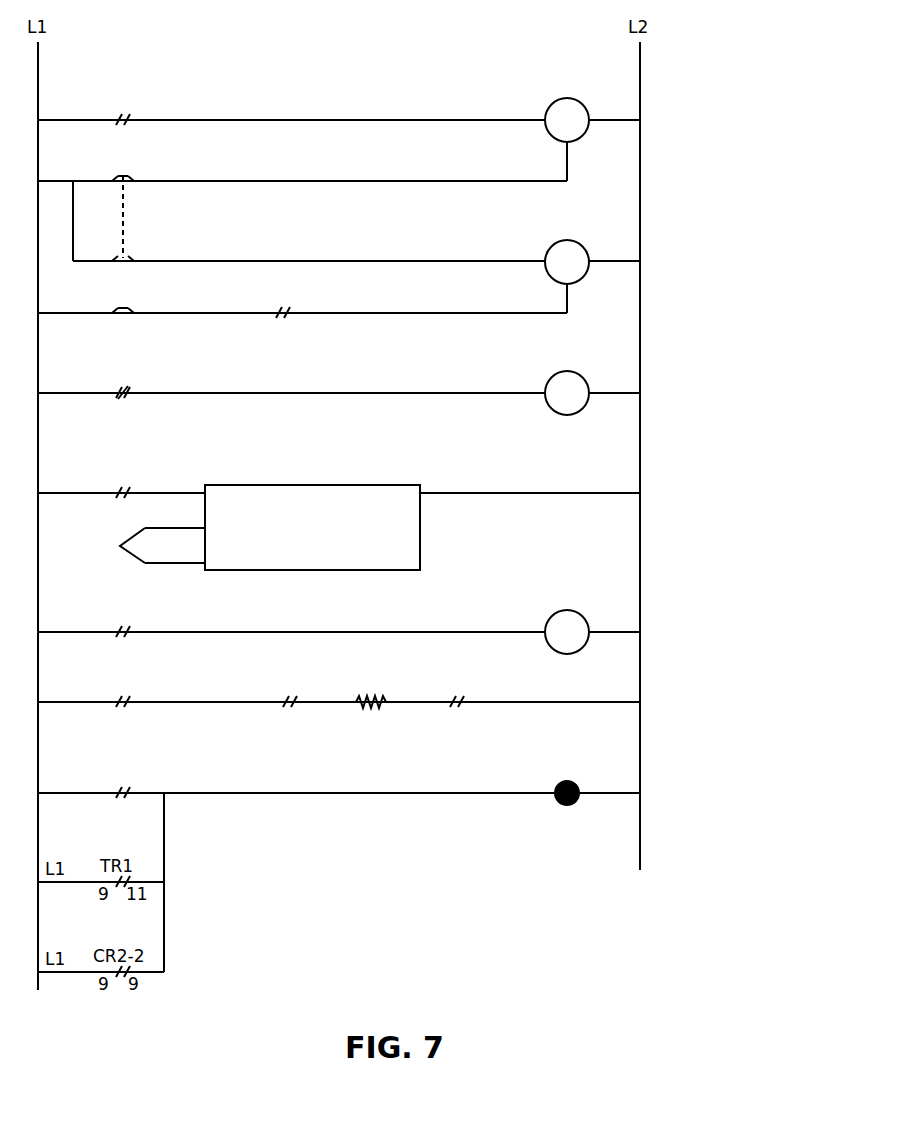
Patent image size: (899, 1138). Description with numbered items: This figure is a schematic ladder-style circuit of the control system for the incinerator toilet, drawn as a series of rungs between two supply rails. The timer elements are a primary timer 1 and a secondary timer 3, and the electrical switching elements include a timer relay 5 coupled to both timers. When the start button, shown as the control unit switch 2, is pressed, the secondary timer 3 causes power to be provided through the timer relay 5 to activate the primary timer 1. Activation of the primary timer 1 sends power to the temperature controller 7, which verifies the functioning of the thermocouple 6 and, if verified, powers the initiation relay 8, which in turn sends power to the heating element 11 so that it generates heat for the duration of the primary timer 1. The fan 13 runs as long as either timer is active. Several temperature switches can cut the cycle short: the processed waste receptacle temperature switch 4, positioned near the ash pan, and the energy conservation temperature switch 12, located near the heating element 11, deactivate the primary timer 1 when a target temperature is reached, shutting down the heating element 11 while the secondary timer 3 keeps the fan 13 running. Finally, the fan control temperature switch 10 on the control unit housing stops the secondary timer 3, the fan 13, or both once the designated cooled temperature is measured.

The primary timer 1 is at (414, 136).
The control unit switch 2 is at (302, 216).
The secondary timer 3 is at (432, 270).
The processed waste receptacle temperature switch 4 is at (128, 318).
The timer relay 5 is at (420, 352).
The thermocouple 6 is at (123, 554).
The temperature controller 7 is at (446, 518).
The initiation relay 8 is at (420, 630).
The fan control temperature switch 10 is at (290, 707).
The heating element 11 is at (388, 707).
The energy conservation temperature switch 12 is at (123, 798).
The fan 13 is at (386, 786).